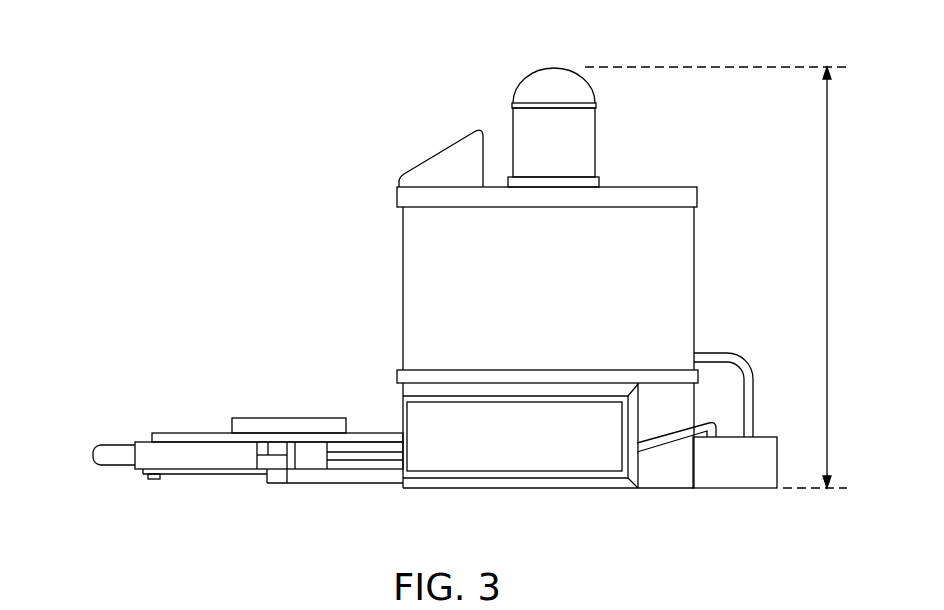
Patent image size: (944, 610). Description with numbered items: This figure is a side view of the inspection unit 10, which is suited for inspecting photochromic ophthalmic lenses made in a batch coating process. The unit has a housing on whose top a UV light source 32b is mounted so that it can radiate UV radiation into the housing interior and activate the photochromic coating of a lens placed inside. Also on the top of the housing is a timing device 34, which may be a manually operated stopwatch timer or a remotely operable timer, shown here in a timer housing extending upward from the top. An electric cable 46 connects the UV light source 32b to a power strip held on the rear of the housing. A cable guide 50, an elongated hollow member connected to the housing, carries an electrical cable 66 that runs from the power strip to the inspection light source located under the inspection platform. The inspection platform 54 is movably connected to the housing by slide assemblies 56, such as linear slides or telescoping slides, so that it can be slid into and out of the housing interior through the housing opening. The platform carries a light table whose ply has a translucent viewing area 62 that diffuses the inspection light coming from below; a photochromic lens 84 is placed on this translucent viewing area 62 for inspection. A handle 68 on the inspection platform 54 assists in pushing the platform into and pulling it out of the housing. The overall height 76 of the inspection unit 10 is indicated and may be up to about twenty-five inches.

The inspection unit 10 is at (253, 121).
The UV light source 32b is at (554, 68).
The timing device 34 is at (437, 150).
The electric cable 46 is at (752, 373).
The cable guide 50 is at (489, 447).
The inspection platform 54 is at (155, 480).
The slide assembly 56 is at (292, 458).
The translucent viewing area 62 is at (195, 433).
The electrical cable 66 is at (672, 444).
The handle 68 is at (93, 454).
The height 76 is at (829, 279).
The photochromic lens 84 is at (288, 418).